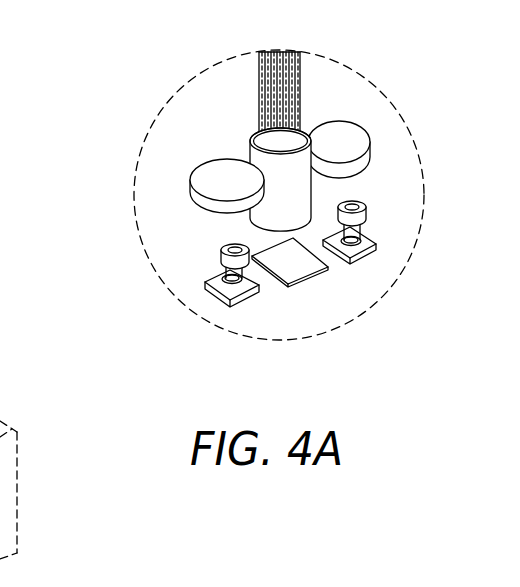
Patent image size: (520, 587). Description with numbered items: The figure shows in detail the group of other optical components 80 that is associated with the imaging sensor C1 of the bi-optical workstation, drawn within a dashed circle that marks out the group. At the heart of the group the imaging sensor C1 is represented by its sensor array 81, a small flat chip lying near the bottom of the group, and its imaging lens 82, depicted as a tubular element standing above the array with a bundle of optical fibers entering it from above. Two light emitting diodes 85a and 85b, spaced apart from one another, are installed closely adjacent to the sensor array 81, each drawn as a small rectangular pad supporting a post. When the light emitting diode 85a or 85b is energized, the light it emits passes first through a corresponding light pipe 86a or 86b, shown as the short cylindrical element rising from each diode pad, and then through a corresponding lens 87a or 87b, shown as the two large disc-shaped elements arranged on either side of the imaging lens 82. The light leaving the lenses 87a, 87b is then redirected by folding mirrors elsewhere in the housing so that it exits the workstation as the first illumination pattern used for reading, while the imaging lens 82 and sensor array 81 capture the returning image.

The group of other optical components 80 is at (202, 72).
The sensor array 81 is at (292, 259).
The imaging lens 82 is at (250, 150).
The light emitting diode 85a is at (205, 281).
The light emitting diode 85b is at (372, 236).
The light pipe 86a is at (222, 249).
The light pipe 86b is at (366, 204).
The lens 87a is at (205, 185).
The lens 87b is at (338, 133).